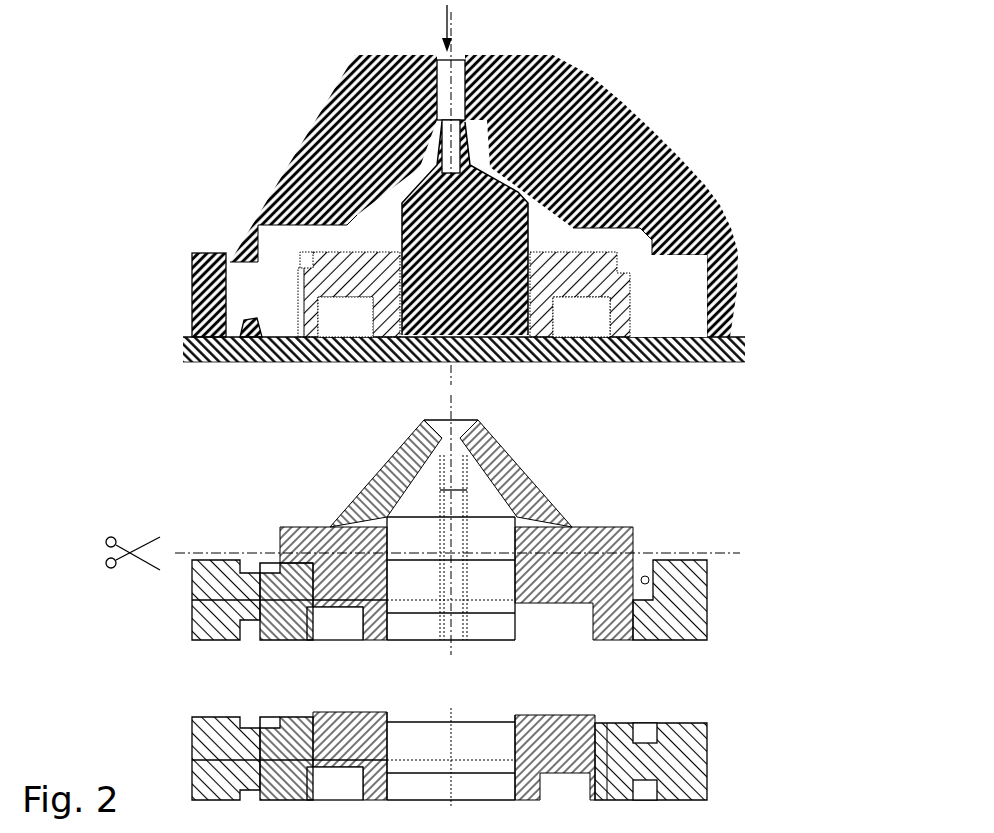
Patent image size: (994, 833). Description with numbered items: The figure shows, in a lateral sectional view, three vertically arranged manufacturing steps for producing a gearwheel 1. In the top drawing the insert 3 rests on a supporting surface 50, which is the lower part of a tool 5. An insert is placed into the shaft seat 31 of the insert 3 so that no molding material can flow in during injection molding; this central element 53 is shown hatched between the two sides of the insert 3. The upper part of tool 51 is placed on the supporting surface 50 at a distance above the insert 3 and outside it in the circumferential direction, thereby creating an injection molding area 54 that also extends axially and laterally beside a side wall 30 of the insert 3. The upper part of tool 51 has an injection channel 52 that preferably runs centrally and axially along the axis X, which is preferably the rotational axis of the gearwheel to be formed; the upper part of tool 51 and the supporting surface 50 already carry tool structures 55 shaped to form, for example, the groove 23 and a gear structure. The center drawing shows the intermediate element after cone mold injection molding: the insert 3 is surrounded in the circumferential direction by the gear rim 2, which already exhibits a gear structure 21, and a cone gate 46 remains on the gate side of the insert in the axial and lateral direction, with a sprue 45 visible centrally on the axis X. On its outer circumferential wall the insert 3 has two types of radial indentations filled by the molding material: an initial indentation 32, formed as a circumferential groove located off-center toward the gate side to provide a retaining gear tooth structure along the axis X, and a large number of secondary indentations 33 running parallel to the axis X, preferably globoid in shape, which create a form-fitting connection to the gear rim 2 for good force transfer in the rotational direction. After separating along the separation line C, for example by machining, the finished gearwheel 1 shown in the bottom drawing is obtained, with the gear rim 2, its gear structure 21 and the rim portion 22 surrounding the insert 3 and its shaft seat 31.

The gearwheel 1 is at (157, 700).
The gear rim 2 is at (207, 516).
The insert 3 is at (395, 246).
The tool 5 is at (298, 47).
The gear structure 21 is at (192, 607).
The disk portion 22 is at (300, 716).
The groove 23 is at (262, 567).
The side wall 30 is at (590, 252).
The shaft seat 31 is at (397, 312).
The initial indentation 32 is at (304, 258).
The secondary indentations 33 is at (298, 290).
The sprue 45 is at (446, 419).
The cone gate 46 is at (393, 455).
The supporting surface 50 is at (183, 348).
The upper part of tool 51 is at (327, 112).
The injection channel 52 is at (436, 58).
The punch 53 is at (528, 207).
The injection molding area 54 is at (657, 317).
The tool structures 55 is at (228, 261).
The axis X is at (458, 46).
The separation line C is at (179, 552).